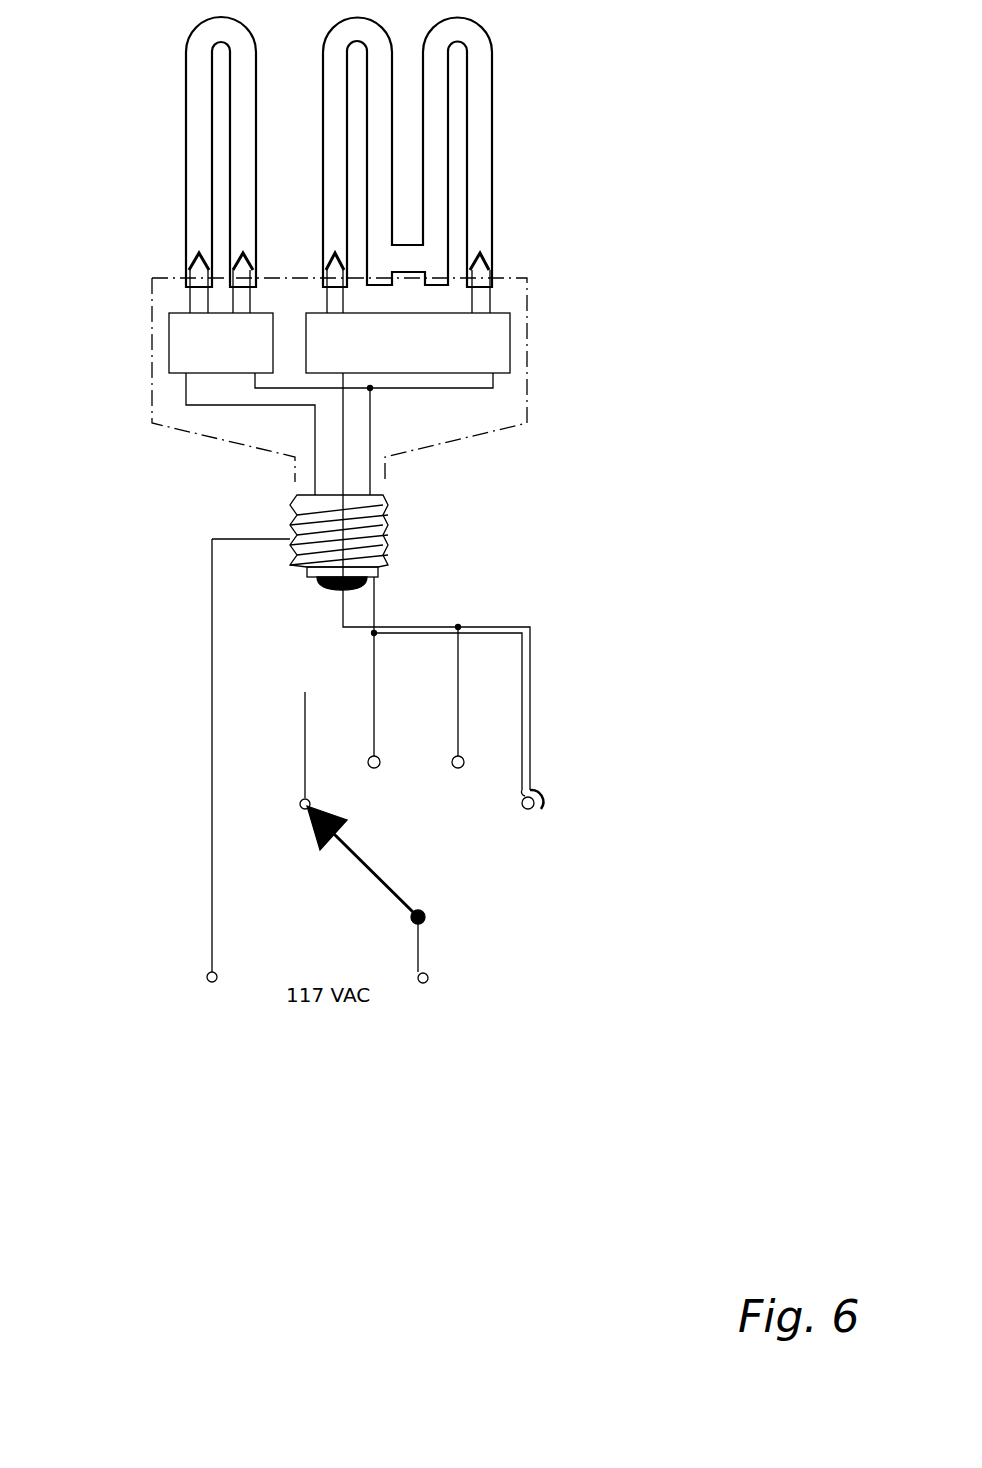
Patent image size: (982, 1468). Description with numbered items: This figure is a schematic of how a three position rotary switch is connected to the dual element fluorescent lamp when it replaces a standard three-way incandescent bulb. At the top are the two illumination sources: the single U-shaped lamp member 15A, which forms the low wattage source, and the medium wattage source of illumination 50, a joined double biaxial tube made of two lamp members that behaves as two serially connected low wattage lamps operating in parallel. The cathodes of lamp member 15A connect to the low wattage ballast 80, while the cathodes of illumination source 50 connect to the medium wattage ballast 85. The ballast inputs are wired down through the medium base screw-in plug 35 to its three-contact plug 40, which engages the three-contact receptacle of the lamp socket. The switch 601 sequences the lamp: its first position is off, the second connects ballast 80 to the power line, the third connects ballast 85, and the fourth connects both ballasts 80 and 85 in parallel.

The lamp member 15A is at (183, 82).
The medium wattage source of illumination 50 is at (493, 78).
The low wattage ballast 80 is at (168, 323).
The medium wattage ballast 85 is at (512, 322).
The medium base screw-in plug 35 is at (293, 522).
The 3-contact plug 40 is at (320, 582).
The switch 601 is at (360, 820).